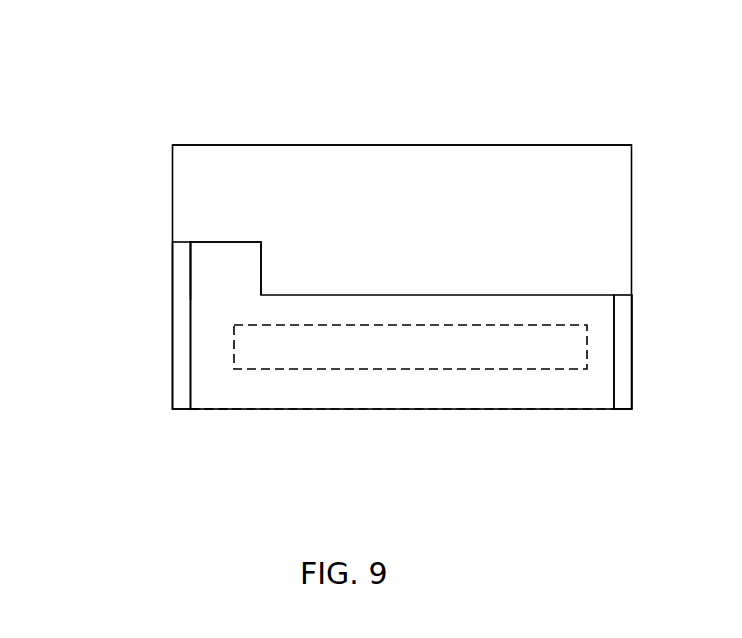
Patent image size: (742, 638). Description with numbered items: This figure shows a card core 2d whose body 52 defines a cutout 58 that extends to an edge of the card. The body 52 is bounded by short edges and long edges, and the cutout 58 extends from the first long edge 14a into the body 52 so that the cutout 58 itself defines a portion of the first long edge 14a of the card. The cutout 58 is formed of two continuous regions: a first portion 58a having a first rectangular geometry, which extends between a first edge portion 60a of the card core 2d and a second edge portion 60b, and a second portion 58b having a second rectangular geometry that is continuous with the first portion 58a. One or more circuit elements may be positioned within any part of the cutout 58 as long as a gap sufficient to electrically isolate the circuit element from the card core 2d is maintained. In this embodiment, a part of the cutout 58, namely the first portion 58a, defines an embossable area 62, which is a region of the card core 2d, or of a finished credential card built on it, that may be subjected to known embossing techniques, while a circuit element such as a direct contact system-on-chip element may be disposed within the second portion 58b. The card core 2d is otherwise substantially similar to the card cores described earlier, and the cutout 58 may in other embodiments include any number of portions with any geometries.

The card core 2d is at (543, 100).
The first long edge 14a is at (353, 143).
The body 52 is at (619, 175).
The cutout 58 is at (357, 387).
The first portion 58a is at (243, 377).
The second portion 58b is at (212, 274).
The first edge portion 60a is at (632, 340).
The second edge portion 60b is at (172, 332).
The embossable area 62 is at (523, 370).